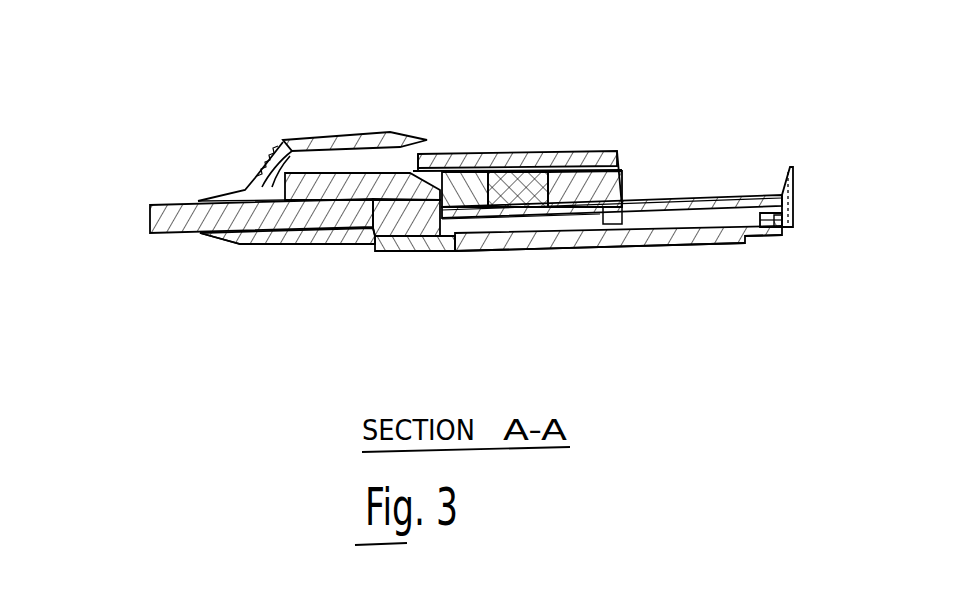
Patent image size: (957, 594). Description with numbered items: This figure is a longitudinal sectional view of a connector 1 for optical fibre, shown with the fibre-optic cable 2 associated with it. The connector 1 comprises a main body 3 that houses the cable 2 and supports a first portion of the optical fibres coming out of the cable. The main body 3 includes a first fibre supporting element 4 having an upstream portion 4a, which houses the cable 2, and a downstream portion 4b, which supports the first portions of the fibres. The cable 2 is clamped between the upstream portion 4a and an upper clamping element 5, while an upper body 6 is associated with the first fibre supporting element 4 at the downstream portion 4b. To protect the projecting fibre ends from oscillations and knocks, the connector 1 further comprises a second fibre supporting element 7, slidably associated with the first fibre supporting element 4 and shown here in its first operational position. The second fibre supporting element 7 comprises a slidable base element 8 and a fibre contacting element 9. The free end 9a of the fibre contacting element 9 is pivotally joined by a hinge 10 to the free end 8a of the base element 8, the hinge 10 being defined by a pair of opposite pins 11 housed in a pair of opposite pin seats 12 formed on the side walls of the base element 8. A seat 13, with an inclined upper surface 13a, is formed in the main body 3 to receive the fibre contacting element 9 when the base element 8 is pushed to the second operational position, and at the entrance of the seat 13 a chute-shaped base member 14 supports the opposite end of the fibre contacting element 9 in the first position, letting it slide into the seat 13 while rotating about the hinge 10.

The connector 1 is at (521, 197).
The fibre-optic cable 2 is at (173, 218).
The main body 3 is at (357, 252).
The first fibre supporting element 4 is at (412, 247).
The upstream portion 4a is at (215, 256).
The downstream portion 4b is at (500, 216).
The upper clamping element 5 is at (289, 188).
The upper body 6 is at (620, 165).
The second fibre supporting element 7 is at (735, 262).
The slidable base element 8 is at (690, 248).
The free end of the base element 8a is at (793, 244).
The fibre contacting element 9 is at (712, 197).
The free end of the fibre contacting element 9a is at (775, 192).
The hinge 10 is at (794, 236).
The pins 11 is at (789, 225).
The pin seats 12 is at (777, 228).
The seat 13 is at (555, 216).
The upper surface of the seat 13a is at (605, 212).
The base member 14 is at (622, 230).